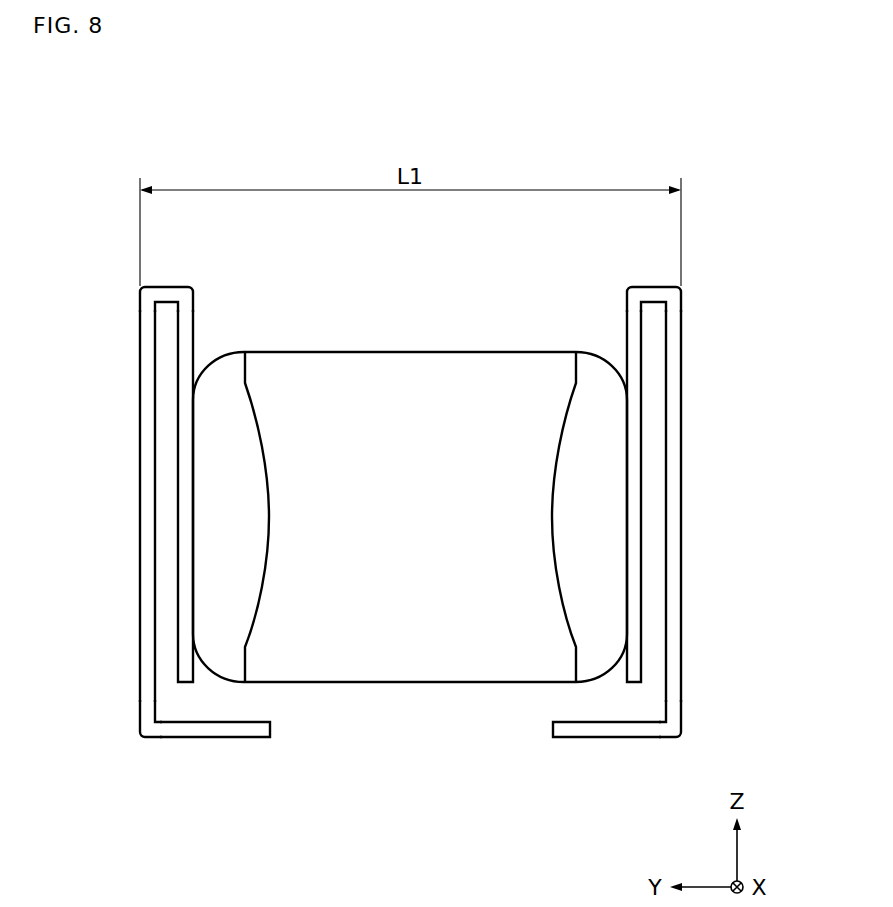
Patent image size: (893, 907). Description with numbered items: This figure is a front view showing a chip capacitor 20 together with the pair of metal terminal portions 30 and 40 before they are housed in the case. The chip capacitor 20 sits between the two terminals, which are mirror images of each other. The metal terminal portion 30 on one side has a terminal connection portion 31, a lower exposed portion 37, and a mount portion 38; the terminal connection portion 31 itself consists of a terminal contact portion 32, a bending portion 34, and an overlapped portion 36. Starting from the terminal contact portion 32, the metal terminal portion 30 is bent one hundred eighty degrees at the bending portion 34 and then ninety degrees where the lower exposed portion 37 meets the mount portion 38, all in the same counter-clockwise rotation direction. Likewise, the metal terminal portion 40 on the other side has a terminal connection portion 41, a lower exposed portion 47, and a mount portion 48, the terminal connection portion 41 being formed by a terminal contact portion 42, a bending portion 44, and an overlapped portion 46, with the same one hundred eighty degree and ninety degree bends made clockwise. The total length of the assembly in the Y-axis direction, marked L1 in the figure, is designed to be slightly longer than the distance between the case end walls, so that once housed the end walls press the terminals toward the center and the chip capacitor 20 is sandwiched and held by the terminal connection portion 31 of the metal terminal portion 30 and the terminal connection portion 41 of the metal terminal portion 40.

The chip capacitor 20 is at (388, 349).
The metal terminal portion 30 is at (152, 497).
The terminal connection portion 31 is at (101, 494).
The terminal contact portion 32 is at (185, 403).
The bending portion 34 is at (160, 303).
The overlapped portion 36 is at (65, 345).
The lower exposed portion 37 is at (148, 694).
The mount portion 38 is at (208, 730).
The metal terminal portion 40 is at (677, 502).
The terminal connection portion 41 is at (715, 494).
The terminal contact portion 42 is at (662, 397).
The bending portion 44 is at (660, 303).
The overlapped portion 46 is at (745, 335).
The lower exposed portion 47 is at (670, 698).
The mount portion 48 is at (610, 730).